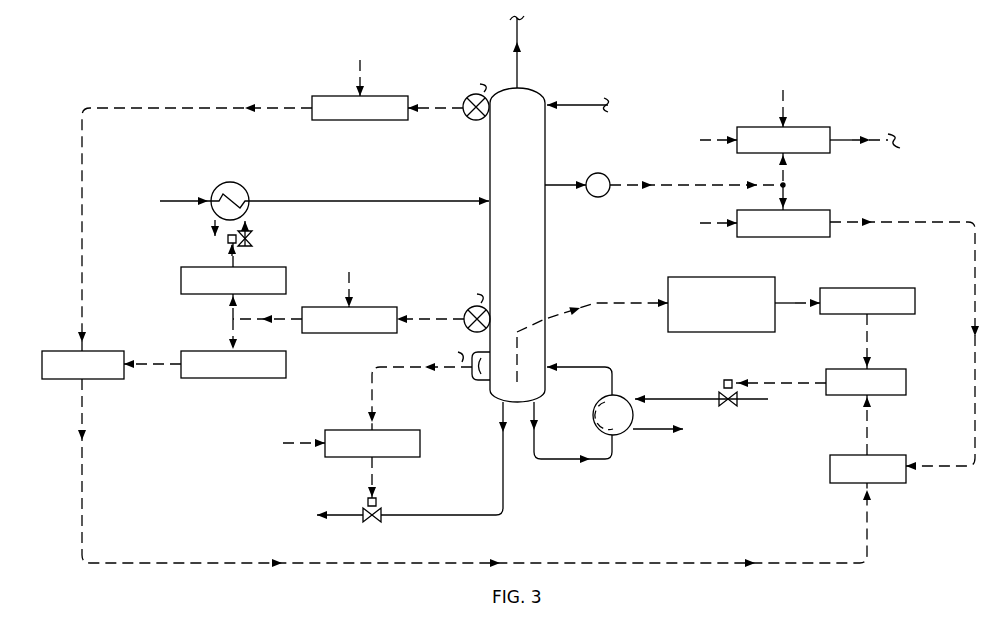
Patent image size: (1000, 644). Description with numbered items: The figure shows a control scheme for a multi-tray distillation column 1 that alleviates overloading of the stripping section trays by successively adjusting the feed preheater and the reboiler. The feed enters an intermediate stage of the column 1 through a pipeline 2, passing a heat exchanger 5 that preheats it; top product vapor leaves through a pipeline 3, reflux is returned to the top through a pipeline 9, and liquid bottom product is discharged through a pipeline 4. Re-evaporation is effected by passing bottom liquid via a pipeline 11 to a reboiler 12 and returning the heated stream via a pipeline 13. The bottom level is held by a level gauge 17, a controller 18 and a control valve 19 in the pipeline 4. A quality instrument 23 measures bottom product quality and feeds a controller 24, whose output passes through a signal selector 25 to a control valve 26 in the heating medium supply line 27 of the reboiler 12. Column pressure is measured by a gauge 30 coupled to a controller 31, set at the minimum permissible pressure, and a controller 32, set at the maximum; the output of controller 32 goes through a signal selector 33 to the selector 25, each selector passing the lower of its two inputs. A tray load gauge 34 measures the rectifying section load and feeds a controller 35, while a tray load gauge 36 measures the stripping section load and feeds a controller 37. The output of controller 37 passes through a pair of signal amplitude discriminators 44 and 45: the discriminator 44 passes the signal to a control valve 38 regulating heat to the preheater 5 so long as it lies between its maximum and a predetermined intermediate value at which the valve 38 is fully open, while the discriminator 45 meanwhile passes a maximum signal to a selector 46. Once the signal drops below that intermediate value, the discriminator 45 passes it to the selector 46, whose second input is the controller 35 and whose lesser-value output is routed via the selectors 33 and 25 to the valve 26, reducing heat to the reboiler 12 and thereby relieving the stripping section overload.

The distillation column 1 is at (523, 255).
The feed pipeline 2 is at (367, 204).
The top product discharge pipeline 3 is at (521, 30).
The bottom product pipeline 4 is at (446, 512).
The heat exchanger 5 is at (214, 190).
The reflux pipeline 9 is at (570, 106).
The bottom liquid pipeline 11 is at (553, 459).
The reboiler 12 is at (600, 395).
The return pipeline 13 is at (571, 367).
The level gauge 17 is at (460, 376).
The controller 18 is at (358, 457).
The control valve 19 is at (371, 522).
The quality instrument 23 is at (720, 277).
The controller 24 is at (878, 288).
The signal selector 25 is at (882, 369).
The control valve 26 is at (729, 406).
The heating medium supply line 27 is at (658, 399).
The pressure gauge 30 is at (594, 196).
The controller 31 is at (810, 153).
The controller 32 is at (808, 210).
The signal selector 33 is at (882, 455).
The tray load gauge 34 is at (474, 128).
The controller 35 is at (352, 120).
The tray load gauge 36 is at (468, 330).
The controller 37 is at (347, 333).
The control valve 38 is at (256, 240).
The signal amplitude discriminator 44 is at (200, 267).
The signal amplitude discriminator 45 is at (214, 351).
The selector 46 is at (102, 380).